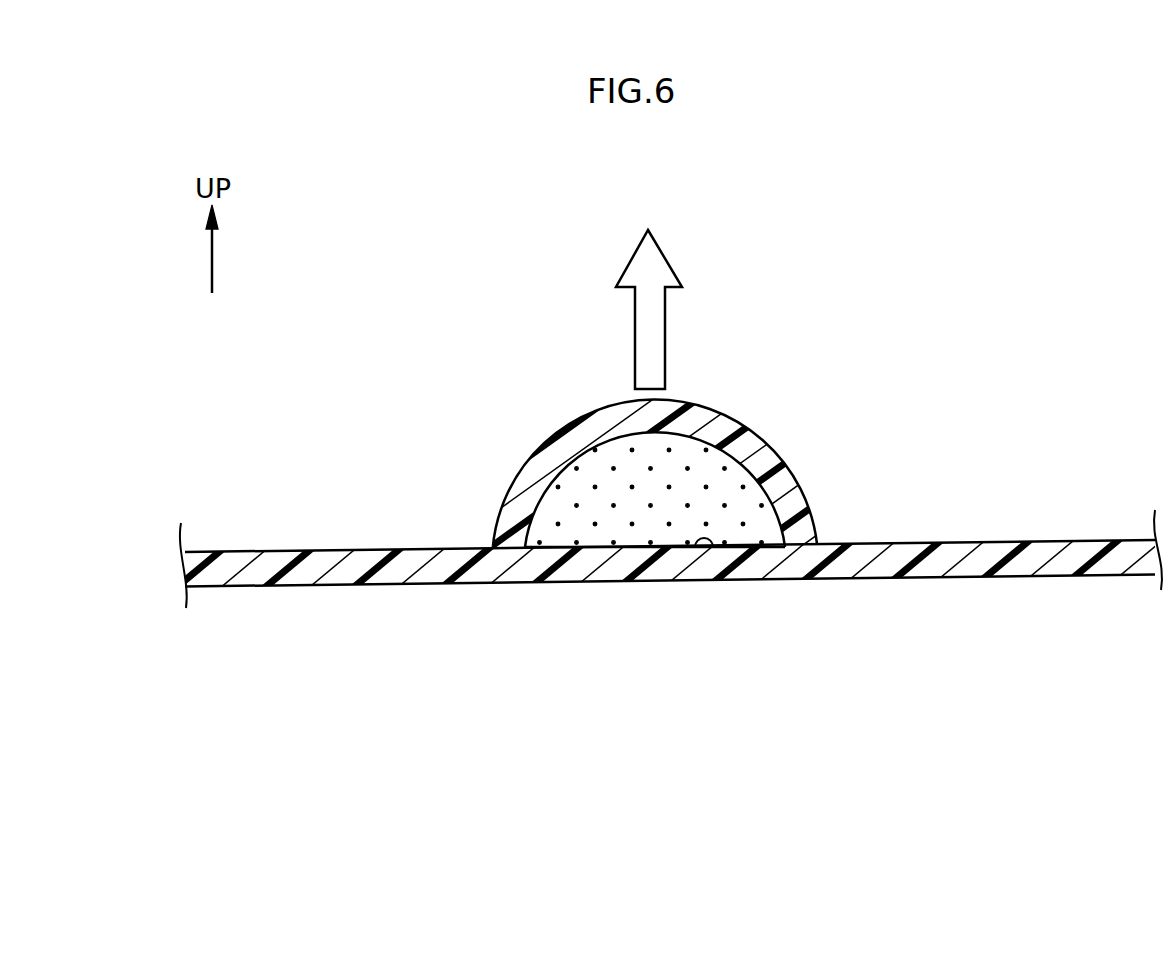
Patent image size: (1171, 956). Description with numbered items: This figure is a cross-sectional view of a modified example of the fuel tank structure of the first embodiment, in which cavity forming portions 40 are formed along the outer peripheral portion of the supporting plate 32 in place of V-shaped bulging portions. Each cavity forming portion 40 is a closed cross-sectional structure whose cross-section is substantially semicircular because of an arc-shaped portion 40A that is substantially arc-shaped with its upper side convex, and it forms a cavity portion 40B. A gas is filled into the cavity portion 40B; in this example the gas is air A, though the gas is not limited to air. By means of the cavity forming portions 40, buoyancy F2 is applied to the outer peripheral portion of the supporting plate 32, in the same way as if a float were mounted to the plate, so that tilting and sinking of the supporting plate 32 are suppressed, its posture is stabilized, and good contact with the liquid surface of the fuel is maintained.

The supporting plate 32 is at (1054, 537).
The cavity forming portion 40 is at (774, 439).
The arc-shaped portion 40A is at (769, 502).
The cavity portion 40B is at (709, 550).
The air A is at (607, 522).
The buoyancy F2 is at (665, 327).